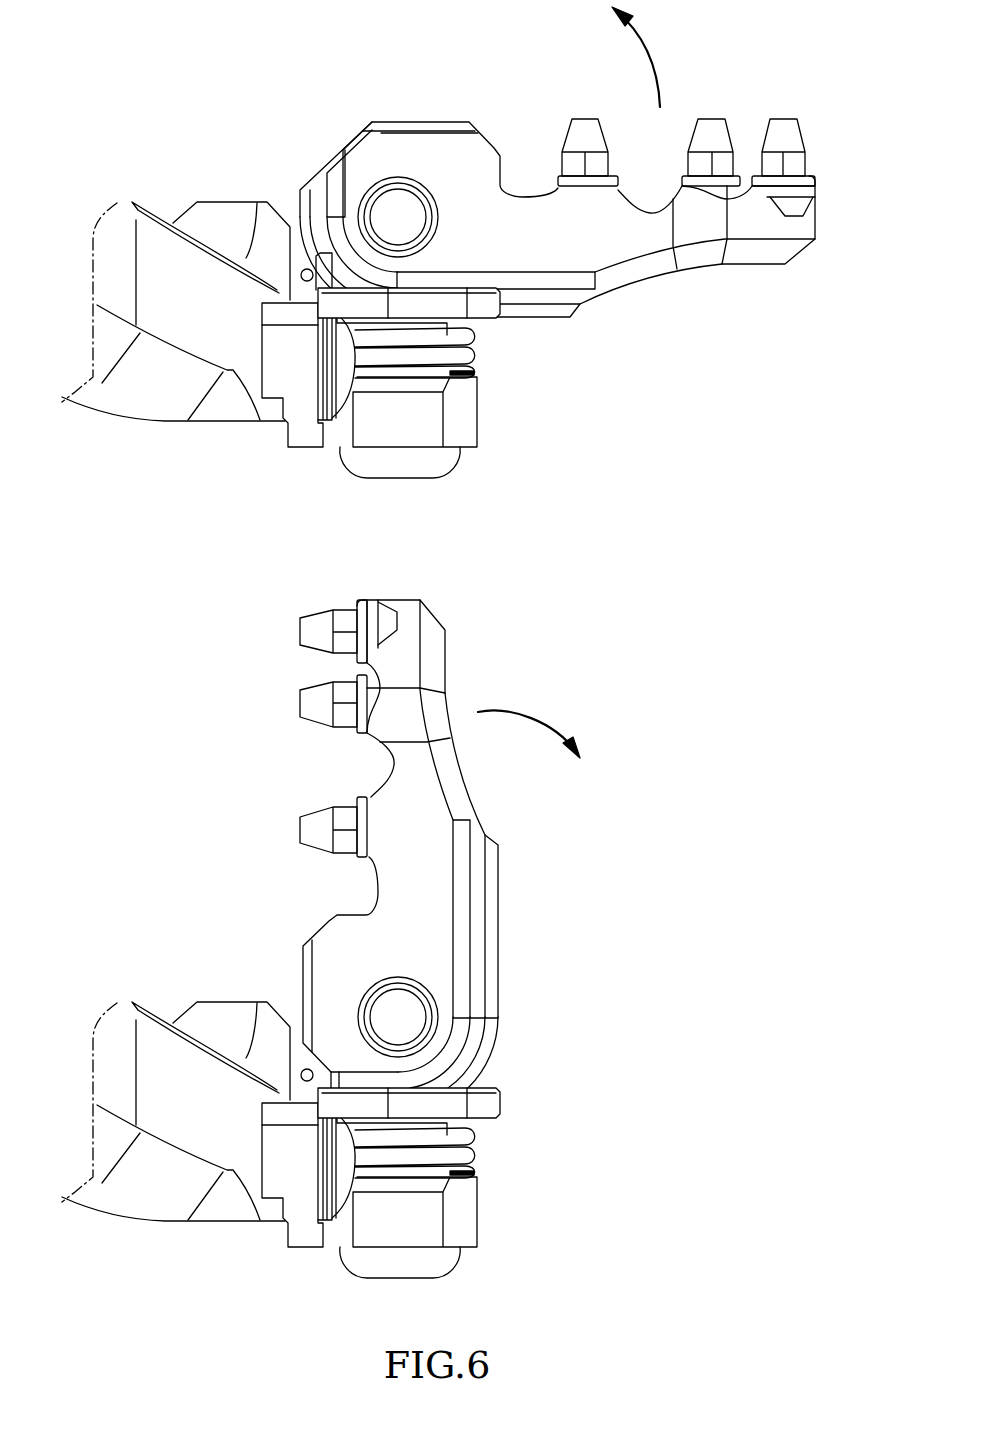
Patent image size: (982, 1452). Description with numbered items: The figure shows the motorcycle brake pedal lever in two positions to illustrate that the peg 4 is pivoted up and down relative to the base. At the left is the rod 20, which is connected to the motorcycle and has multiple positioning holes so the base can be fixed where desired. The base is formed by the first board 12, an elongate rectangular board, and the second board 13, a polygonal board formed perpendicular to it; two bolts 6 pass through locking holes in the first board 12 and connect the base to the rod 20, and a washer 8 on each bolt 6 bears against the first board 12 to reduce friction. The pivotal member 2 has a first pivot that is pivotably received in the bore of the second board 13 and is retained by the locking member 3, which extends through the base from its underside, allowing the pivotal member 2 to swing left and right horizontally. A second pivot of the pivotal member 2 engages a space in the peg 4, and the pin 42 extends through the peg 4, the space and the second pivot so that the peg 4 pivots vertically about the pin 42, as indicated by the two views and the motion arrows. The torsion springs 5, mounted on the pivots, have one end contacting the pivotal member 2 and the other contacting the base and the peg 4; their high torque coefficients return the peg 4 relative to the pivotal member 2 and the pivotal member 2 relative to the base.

The pivotal member 2 is at (497, 327).
The locking member 3 is at (437, 462).
The peg 4 is at (394, 112).
The torsion springs 5 is at (470, 363).
The bolts 6 is at (340, 393).
The washer 8 is at (327, 432).
The first board 12 is at (273, 377).
The second board 13 is at (467, 427).
The rod 20 is at (153, 393).
The pin 42 is at (390, 216).